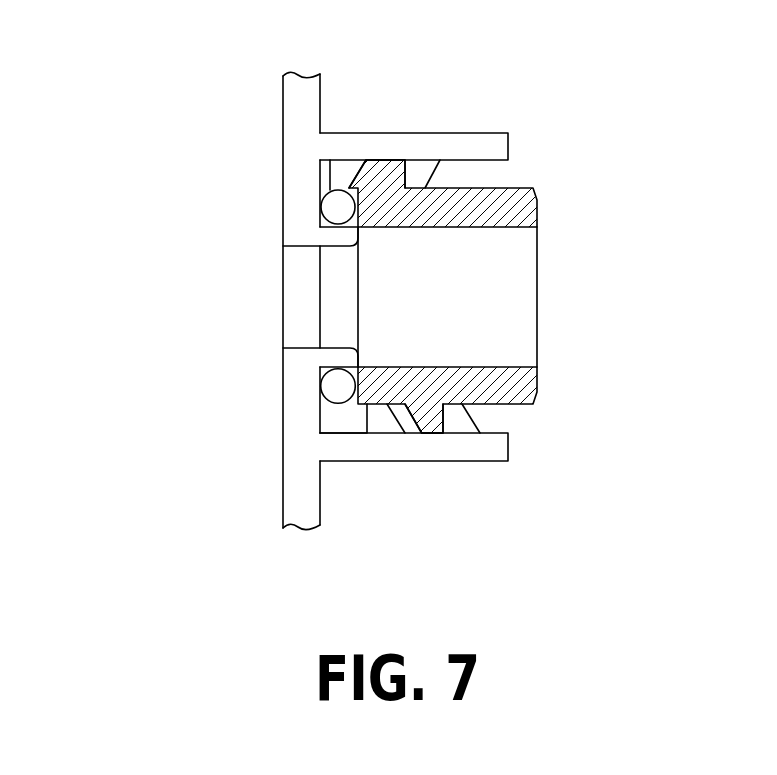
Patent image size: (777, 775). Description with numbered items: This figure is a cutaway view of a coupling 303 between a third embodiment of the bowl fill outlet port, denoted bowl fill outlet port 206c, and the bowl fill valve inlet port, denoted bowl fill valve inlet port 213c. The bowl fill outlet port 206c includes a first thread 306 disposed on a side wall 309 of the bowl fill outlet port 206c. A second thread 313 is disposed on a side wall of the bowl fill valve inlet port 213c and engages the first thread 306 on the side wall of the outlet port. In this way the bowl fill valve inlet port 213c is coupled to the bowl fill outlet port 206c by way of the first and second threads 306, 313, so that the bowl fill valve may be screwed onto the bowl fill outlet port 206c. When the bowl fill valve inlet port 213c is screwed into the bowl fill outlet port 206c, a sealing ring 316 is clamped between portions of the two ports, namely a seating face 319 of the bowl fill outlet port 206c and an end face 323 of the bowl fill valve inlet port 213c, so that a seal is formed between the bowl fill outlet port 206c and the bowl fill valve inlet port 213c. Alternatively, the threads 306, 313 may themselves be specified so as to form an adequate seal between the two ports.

The coupling 303 is at (158, 102).
The bowl fill outlet port 206c is at (398, 462).
The bowl fill valve inlet port 213c is at (538, 265).
The first thread 306 is at (418, 175).
The side wall 309 is at (486, 160).
The second thread 313 is at (387, 180).
The sealing ring 316 is at (335, 209).
The seating face 319 is at (320, 402).
The end face 323 is at (322, 371).